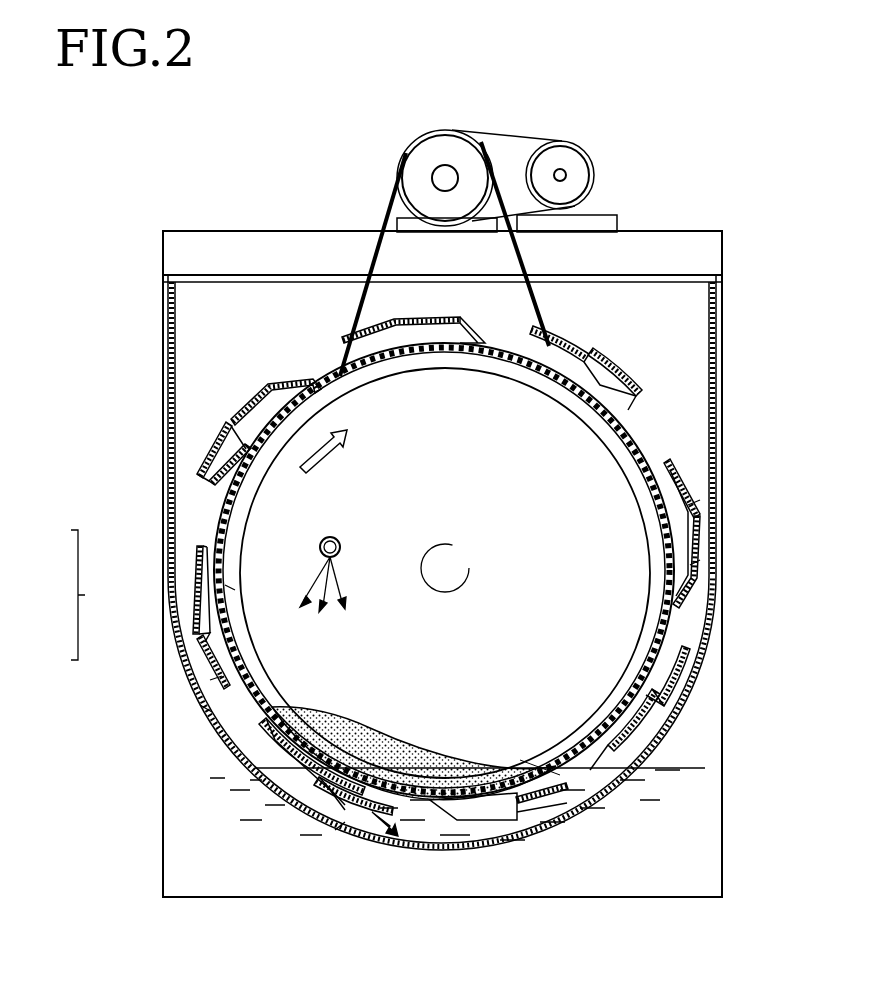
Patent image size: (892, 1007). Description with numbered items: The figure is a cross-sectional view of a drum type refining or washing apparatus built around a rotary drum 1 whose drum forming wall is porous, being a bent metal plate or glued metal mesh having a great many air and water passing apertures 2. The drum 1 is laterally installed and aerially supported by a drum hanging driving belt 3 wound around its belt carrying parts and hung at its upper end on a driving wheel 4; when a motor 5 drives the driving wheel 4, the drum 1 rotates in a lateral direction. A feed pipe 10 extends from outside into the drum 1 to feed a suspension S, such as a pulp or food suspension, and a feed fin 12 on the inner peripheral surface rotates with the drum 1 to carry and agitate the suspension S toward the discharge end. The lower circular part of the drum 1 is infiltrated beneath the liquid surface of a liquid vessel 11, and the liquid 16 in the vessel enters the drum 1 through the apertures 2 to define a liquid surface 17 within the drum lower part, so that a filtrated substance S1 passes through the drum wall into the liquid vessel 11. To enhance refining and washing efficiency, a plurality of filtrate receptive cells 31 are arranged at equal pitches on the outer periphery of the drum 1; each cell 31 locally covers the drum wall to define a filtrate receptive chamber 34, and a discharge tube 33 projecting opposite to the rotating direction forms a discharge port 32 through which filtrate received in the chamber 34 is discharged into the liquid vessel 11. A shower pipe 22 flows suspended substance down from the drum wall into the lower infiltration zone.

The rotary drum 1 is at (345, 362).
The air and water passing apertures 2 is at (640, 445).
The drum hanging driving belt 3 is at (385, 216).
The driving wheel 4 is at (428, 168).
The motor 5 is at (588, 152).
The feed pipe 10 is at (470, 560).
The liquid vessel 11 is at (582, 830).
The feed fin 12 is at (642, 656).
The liquid 16 is at (616, 792).
The liquid surface 17 is at (546, 770).
The shower pipe 22 is at (337, 544).
The filtrate receptive cell 31 is at (612, 386).
The discharge port 32 is at (202, 706).
The discharge tube 33 is at (702, 500).
The filtrate receptive chamber 34 is at (702, 560).
The suspension S is at (430, 746).
The filtrated substance S1 is at (404, 838).